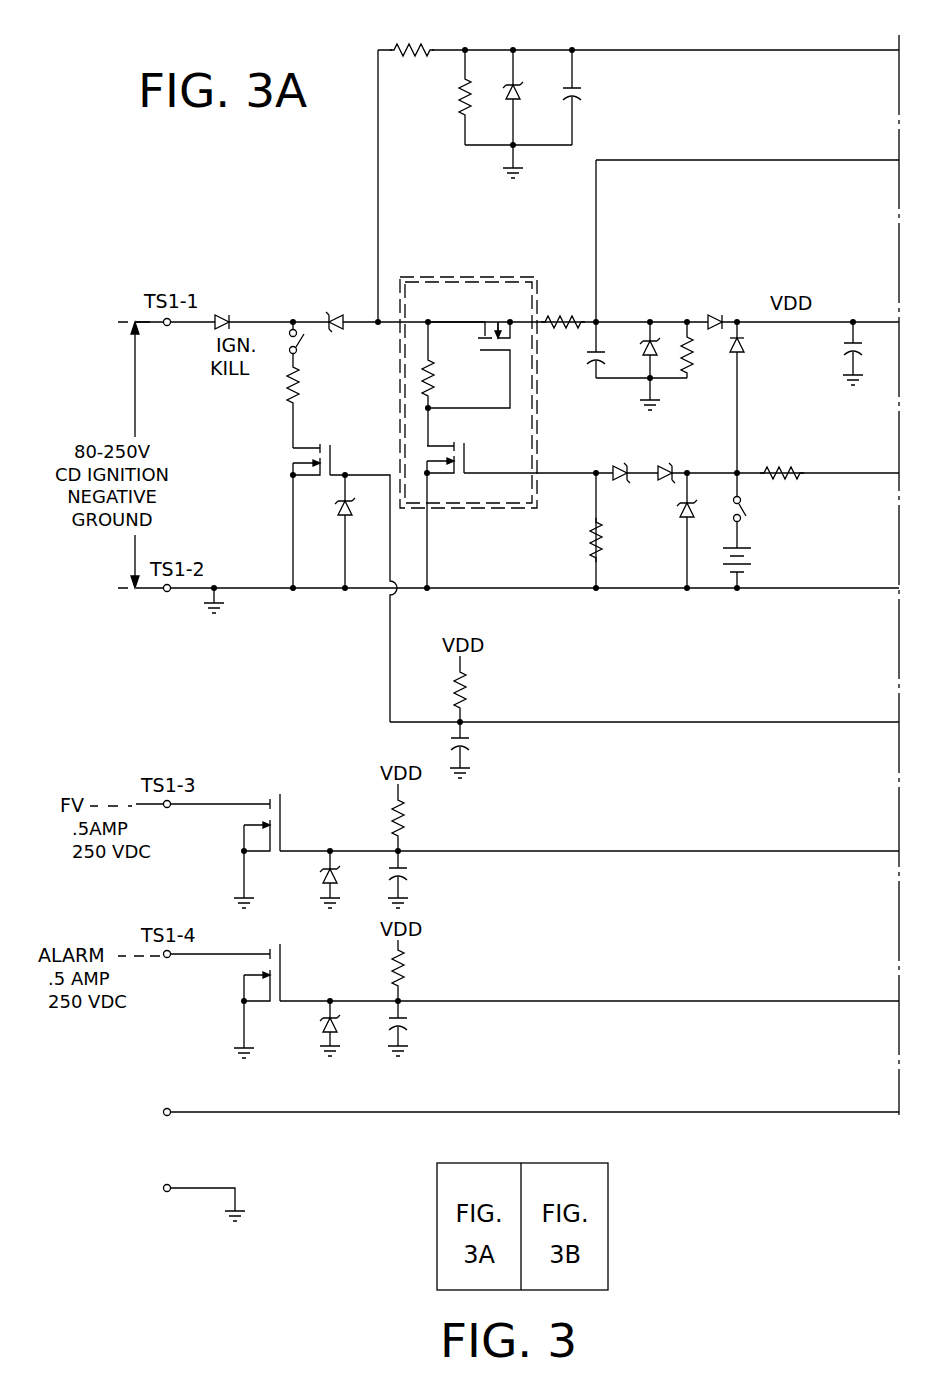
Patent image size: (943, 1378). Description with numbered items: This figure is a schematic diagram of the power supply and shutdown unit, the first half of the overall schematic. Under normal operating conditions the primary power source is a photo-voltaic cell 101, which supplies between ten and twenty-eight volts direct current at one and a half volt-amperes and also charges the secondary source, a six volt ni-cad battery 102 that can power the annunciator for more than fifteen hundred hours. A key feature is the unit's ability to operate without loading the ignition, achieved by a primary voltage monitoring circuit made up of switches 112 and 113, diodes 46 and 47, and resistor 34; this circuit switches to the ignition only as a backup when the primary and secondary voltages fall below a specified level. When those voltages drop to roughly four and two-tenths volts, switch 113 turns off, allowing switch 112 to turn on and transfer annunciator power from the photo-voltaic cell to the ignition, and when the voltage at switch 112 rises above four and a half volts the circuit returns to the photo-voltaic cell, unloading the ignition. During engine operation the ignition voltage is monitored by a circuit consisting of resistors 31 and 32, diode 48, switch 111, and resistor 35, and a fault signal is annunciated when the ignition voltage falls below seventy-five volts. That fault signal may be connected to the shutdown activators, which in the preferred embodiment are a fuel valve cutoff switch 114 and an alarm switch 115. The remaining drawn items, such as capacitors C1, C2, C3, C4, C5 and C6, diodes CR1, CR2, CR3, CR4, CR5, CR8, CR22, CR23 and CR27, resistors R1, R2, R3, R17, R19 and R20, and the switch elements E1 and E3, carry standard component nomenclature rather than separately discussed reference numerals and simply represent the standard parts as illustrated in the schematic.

The resistor 32 is at (412, 37).
The resistor 31 is at (448, 97).
The diode 48 is at (529, 97).
The switch 111 is at (329, 504).
The switch 112 is at (476, 348).
The switch 113 is at (467, 498).
The diode 46 is at (615, 457).
The diode 47 is at (660, 457).
The resistor 35 is at (782, 455).
The resistor 34 is at (577, 530).
The ni-cad battery 102 is at (760, 554).
The fuel valve cutoff switch 114 is at (249, 842).
The alarm switch 115 is at (249, 992).
The photo-voltaic cell 101 is at (473, 1150).
The capacitor C6 is at (590, 97).
The diode CR1 is at (225, 308).
The ignition kill switch E1 is at (283, 338).
The resistor R1 is at (279, 400).
The zener diode CR27 is at (351, 336).
The zener diode CR2 is at (363, 531).
The resistor R2 is at (443, 365).
The resistor R3 is at (563, 307).
The capacitor C1 is at (584, 350).
The zener diode CR3 is at (640, 350).
The resistor R20 is at (701, 350).
The diode CR4 is at (716, 308).
The diode CR5 is at (760, 397).
The capacitor C2 is at (839, 353).
The zener diode CR8 is at (665, 530).
The switch E3 is at (758, 498).
The resistor R17 is at (483, 689).
The capacitor C3 is at (475, 750).
The resistor R19 is at (421, 817).
The capacitor C4 is at (413, 879).
The zener diode CR22 is at (306, 879).
The zener diode CR23 is at (306, 1028).
The capacitor C5 is at (415, 1028).